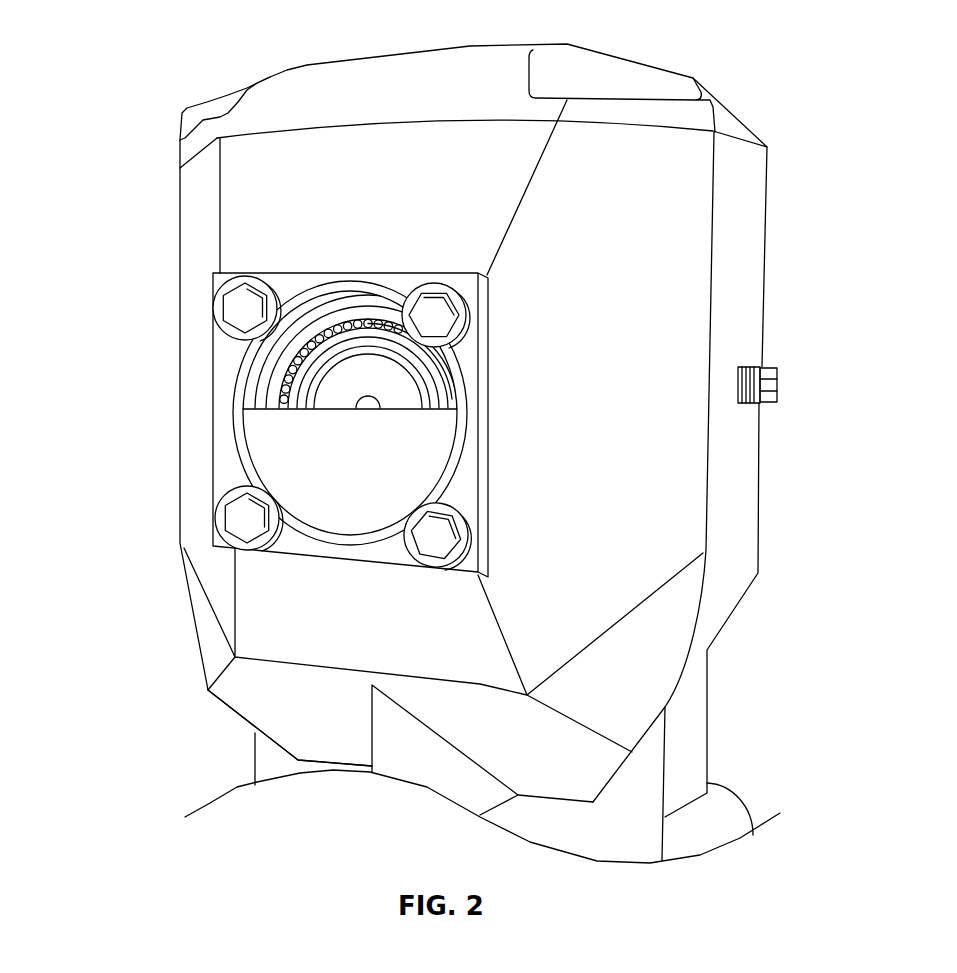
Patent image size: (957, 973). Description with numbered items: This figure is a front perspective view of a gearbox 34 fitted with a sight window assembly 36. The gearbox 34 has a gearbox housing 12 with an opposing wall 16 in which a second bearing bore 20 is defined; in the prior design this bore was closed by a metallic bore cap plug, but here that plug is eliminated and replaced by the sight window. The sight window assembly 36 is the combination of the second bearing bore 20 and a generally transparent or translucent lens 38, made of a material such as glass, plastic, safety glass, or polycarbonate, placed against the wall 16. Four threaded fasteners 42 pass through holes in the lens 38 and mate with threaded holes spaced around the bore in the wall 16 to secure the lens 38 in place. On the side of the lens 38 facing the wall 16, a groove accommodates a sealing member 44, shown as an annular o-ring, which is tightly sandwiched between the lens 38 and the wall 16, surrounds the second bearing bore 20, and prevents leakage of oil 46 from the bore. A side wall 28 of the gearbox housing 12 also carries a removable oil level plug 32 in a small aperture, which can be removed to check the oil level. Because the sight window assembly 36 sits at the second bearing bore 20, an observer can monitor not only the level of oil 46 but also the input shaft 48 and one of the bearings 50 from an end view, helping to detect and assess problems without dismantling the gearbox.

The gearbox housing 12 is at (764, 573).
The wall 16 is at (427, 143).
The second bearing bore 20 is at (262, 358).
The side wall 28 is at (753, 302).
The oil level plug 32 is at (777, 387).
The gearbox 34 is at (122, 76).
The sight window assembly 36 is at (341, 263).
The lens 38 is at (305, 552).
The threaded fastener 42 is at (437, 307).
The sealing member 44 is at (296, 550).
The oil 46 is at (265, 421).
The input shaft 48 is at (268, 358).
The bearing 50 is at (320, 323).